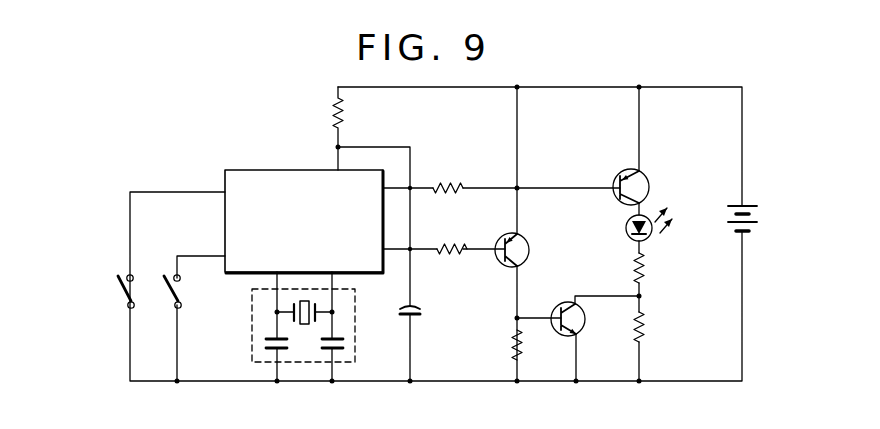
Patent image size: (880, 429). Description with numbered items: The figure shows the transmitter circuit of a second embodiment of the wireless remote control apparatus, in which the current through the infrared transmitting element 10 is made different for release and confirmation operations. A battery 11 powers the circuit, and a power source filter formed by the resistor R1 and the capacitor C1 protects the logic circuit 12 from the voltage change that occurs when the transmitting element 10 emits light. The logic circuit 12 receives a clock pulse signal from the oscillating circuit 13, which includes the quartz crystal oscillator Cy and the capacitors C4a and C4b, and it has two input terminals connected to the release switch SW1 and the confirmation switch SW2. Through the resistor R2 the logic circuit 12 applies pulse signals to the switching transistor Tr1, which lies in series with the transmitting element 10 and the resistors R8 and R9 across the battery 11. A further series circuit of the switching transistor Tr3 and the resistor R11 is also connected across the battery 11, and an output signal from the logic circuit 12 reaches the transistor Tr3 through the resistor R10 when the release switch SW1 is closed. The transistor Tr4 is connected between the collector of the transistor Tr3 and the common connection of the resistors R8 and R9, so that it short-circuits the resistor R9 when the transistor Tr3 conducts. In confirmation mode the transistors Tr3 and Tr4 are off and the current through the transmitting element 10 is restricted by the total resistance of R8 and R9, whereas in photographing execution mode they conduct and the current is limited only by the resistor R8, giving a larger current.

The logic circuit 12 is at (243, 187).
The resistor R1 is at (333, 118).
The resistor R2 is at (448, 181).
The resistor R10 is at (445, 246).
The switching transistor Tr1 is at (623, 169).
The transmitting element 10 is at (628, 232).
The resistor R8 is at (643, 273).
The resistor R9 is at (643, 329).
The switching transistor Tr3 is at (522, 246).
The transistor Tr4 is at (567, 304).
The resistor R11 is at (514, 347).
The capacitor C1 is at (420, 315).
The battery 11 is at (756, 191).
The oscillating circuit 13 is at (248, 310).
The quartz crystal oscillator Cy is at (305, 301).
The capacitor C4a is at (264, 347).
The capacitor C4b is at (344, 347).
The release switch SW1 is at (120, 292).
The confirmation switch SW2 is at (162, 280).